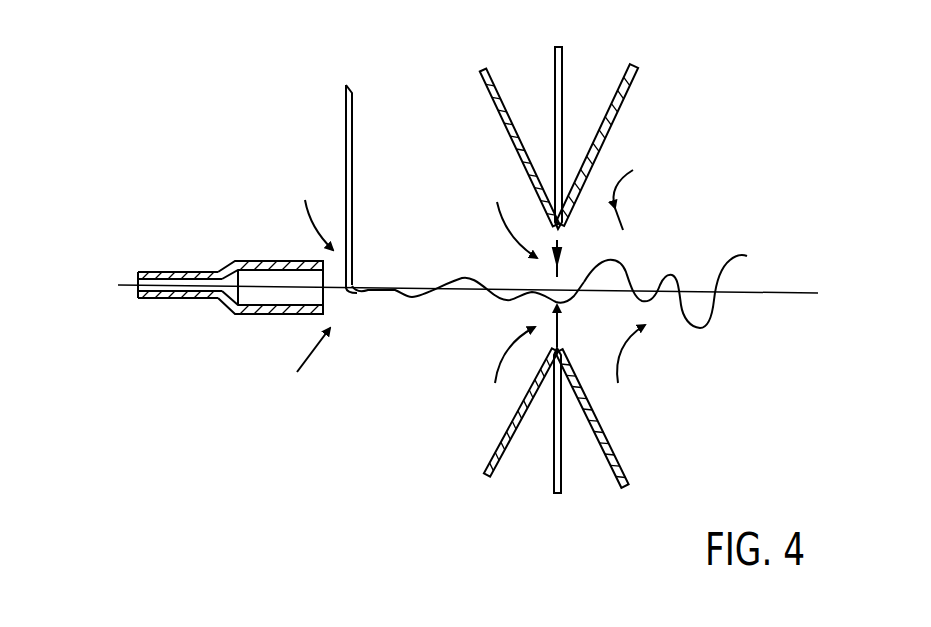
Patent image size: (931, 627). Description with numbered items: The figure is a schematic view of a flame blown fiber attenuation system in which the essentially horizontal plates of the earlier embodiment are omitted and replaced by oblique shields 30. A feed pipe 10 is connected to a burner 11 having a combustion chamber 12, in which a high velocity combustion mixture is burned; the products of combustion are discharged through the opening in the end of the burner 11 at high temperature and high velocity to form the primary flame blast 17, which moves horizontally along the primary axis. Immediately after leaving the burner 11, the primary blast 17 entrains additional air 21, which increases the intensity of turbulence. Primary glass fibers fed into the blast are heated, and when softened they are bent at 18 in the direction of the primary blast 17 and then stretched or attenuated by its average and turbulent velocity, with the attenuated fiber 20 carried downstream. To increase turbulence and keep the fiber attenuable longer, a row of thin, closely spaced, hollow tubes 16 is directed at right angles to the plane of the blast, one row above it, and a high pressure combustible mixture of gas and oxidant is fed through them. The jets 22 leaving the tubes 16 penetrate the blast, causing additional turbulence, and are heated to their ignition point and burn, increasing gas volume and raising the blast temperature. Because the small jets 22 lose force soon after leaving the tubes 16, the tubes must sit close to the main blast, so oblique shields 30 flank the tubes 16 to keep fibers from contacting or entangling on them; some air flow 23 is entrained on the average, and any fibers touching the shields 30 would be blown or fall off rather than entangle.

The feed pipe 10 is at (170, 300).
The burner 11 is at (260, 315).
The combustion chamber 12 is at (268, 278).
The tubes 16 is at (563, 58).
The primary flame blast 17 is at (333, 295).
The bend of softened primary fibers 18 is at (357, 280).
The crimped fiber 20 is at (682, 310).
The additional air 21 is at (296, 181).
The jets 22 is at (561, 248).
The air flow 23 is at (558, 291).
The oblique shields 30 is at (485, 88).